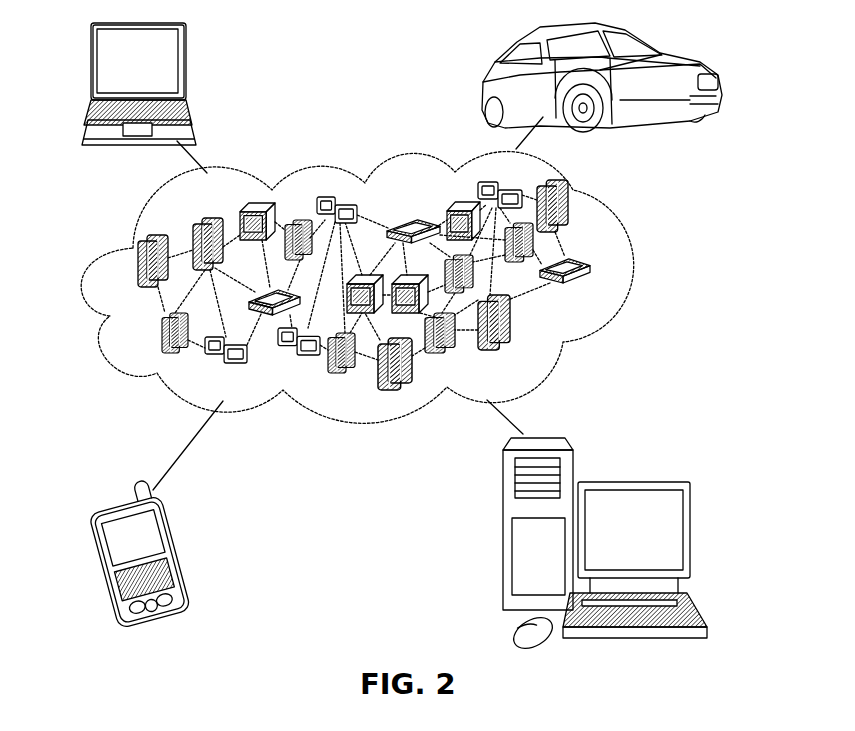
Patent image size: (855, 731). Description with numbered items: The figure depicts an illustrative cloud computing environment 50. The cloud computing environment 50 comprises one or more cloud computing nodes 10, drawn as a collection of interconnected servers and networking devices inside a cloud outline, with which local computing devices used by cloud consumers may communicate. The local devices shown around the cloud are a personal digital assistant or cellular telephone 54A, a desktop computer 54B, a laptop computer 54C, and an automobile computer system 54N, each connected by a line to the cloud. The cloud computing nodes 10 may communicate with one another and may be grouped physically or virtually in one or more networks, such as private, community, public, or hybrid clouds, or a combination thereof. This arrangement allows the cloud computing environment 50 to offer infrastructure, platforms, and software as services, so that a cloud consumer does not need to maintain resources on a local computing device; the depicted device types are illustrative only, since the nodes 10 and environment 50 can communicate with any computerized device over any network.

The cloud computing nodes 10 is at (599, 293).
The cloud computing environment 50 is at (633, 268).
The personal digital assistant (PDA) or cellular telephone 54A is at (181, 553).
The desktop computer 54B is at (630, 481).
The laptop computer 54C is at (187, 67).
The automobile computer system 54N is at (486, 82).